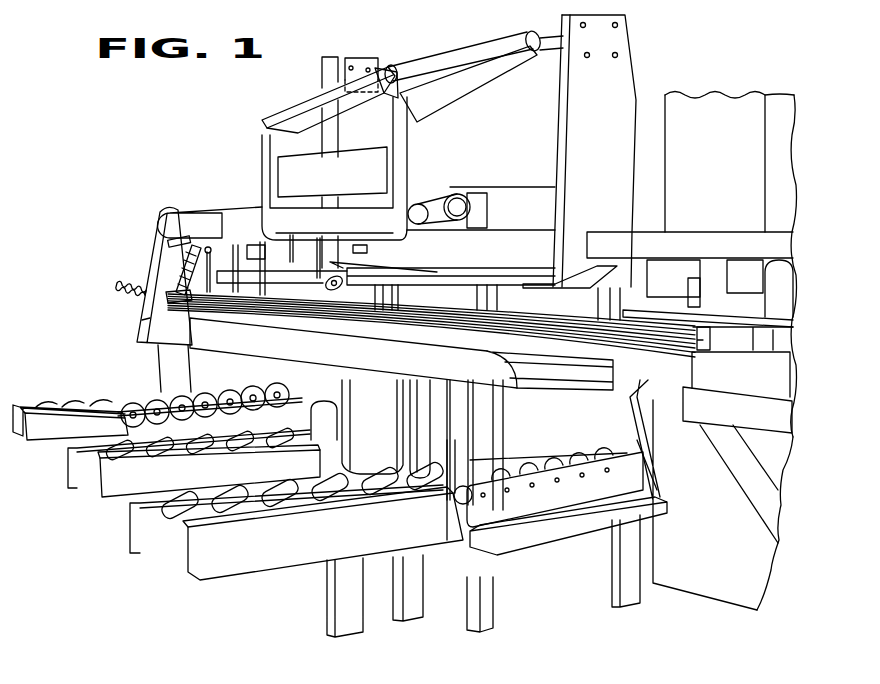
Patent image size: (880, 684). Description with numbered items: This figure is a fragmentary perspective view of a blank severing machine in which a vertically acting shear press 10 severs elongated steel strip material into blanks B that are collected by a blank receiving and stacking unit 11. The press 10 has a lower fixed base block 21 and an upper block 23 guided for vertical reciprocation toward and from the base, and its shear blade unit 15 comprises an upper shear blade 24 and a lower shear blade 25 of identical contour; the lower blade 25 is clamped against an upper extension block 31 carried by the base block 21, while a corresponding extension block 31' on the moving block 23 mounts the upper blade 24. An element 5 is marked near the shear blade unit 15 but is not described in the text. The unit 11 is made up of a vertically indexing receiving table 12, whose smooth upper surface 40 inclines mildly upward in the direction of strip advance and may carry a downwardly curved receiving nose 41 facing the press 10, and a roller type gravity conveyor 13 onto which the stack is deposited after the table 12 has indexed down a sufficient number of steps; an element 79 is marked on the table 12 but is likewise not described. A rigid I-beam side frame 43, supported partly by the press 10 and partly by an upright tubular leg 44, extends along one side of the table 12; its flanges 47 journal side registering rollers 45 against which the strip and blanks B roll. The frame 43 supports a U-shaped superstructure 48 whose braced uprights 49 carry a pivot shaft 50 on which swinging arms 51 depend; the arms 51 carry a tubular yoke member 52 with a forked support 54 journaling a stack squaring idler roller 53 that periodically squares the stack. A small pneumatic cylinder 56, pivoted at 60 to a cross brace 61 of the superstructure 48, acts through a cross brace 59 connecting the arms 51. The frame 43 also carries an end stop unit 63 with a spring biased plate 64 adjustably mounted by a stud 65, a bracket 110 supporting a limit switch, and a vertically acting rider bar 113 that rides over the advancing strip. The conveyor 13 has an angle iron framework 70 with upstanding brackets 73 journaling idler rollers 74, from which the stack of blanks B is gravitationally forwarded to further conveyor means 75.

The support plate 5 is at (632, 300).
The shear press 10 is at (757, 86).
The blank receiving and stacking unit 11 is at (245, 194).
The receiving table 12 is at (398, 372).
The roller type gravity conveyor 13 is at (569, 585).
The shear blade unit 15 is at (690, 311).
The base block 21 is at (718, 386).
The upper block 23 is at (665, 233).
The upper shear blade 24 is at (700, 283).
The lower shear blade 25 is at (705, 338).
The upper extension block 31 is at (741, 374).
The extension block 31' is at (673, 267).
The upper table surface 40 is at (382, 328).
The receiving nose 41 is at (498, 360).
The I-beam side frame 43 is at (184, 245).
The tubular leg 44 is at (165, 363).
The side registering rollers 45 is at (478, 300).
The flanges 47 is at (457, 282).
The U-shaped superstructure 48 is at (551, 241).
The braced uprights 49 is at (352, 64).
The pivot shaft 50 is at (452, 58).
The swinging arms 51 is at (308, 107).
The tubular yoke member 52 is at (345, 210).
The stack squaring idler roller 53 is at (181, 305).
The forked support 54 is at (167, 262).
The pneumatic cylinder 56 is at (447, 192).
The cross brace 59 is at (337, 160).
The cylinder pivot 60 is at (474, 198).
The cross brace of superstructure 61 is at (536, 217).
The end stop unit 63 is at (125, 308).
The spring biased plate 64 is at (146, 319).
The stud 65 is at (118, 282).
The angle iron framework 70 is at (477, 607).
The upstanding brackets 73 is at (293, 407).
The idler rollers 74 is at (207, 396).
The further conveyor means 75 is at (119, 503).
The base 79 is at (380, 456).
The bracket 110 is at (218, 258).
The rider bar 113 is at (284, 290).
The blanks B is at (315, 333).